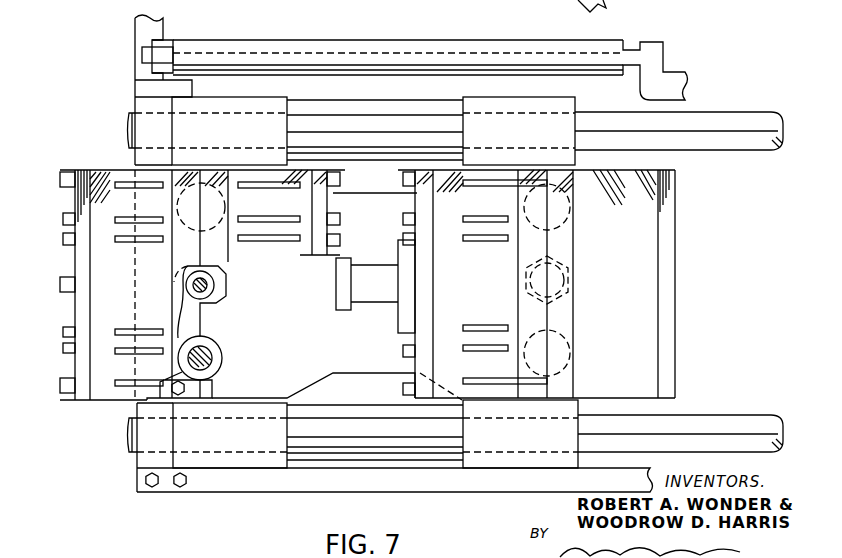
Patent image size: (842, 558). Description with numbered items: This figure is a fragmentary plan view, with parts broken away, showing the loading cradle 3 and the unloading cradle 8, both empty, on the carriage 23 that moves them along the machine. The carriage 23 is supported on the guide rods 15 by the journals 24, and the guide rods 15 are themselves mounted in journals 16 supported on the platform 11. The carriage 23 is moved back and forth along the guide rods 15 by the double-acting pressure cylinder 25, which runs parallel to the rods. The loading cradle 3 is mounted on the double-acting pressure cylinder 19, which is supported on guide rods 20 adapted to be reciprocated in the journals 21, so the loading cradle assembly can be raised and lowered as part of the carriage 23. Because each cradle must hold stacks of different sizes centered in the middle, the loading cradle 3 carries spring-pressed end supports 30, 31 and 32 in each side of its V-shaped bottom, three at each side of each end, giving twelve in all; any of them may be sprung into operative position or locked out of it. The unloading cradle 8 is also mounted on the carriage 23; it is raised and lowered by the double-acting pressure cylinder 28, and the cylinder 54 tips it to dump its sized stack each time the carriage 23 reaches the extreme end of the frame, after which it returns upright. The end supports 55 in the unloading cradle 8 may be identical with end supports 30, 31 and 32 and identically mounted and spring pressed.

The loading cradle 3 is at (108, 395).
The unloading cradle 8 is at (682, 233).
The platform 11 is at (308, 482).
The guide rods 15 is at (740, 114).
The journals 16 is at (148, 442).
The double-acting pressure cylinder 19 is at (208, 292).
The guide rods 20 is at (212, 358).
The journals 21 is at (222, 374).
The carriage 23 is at (353, 373).
The journals 24 is at (250, 100).
The double-acting pressure cylinder 25 is at (366, 50).
The double-acting pressure cylinder 28 is at (570, 272).
The end support 30 is at (127, 330).
The end support 31 is at (117, 222).
The end support 32 is at (120, 184).
The cylinder 54 is at (377, 296).
The end supports 55 is at (466, 238).